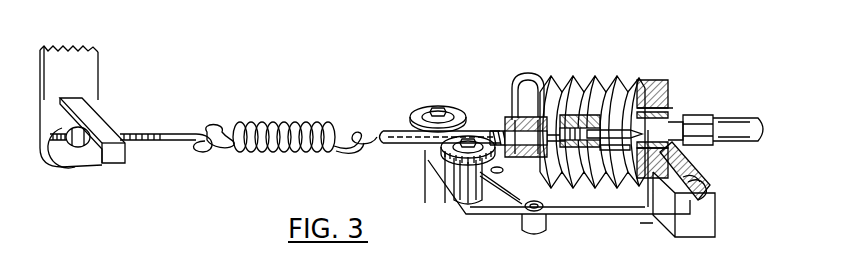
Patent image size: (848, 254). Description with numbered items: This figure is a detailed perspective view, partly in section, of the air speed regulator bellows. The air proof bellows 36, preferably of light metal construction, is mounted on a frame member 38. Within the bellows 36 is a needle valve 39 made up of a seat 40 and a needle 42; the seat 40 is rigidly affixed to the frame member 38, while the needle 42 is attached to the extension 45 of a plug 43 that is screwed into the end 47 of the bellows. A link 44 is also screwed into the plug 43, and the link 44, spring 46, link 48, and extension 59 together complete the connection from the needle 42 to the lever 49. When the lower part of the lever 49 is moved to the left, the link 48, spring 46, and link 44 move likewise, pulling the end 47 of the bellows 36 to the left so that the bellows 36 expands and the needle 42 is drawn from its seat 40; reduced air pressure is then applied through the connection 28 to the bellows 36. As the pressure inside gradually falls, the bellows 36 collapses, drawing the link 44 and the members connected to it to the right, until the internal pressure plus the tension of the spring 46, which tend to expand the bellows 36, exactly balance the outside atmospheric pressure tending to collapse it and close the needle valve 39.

The connection 28 is at (738, 128).
The air proof bellows 36 is at (580, 80).
The frame member 38 is at (648, 80).
The needle valve 39 is at (627, 177).
The seat 40 is at (610, 112).
The needle 42 is at (605, 183).
The plug 43 is at (507, 127).
The link 44 is at (393, 131).
The extension 45 is at (533, 103).
The spring 46 is at (275, 121).
The end of the bellows 47 is at (514, 104).
The link 48 is at (174, 134).
The lever 49 is at (88, 72).
The extension 59 is at (100, 127).